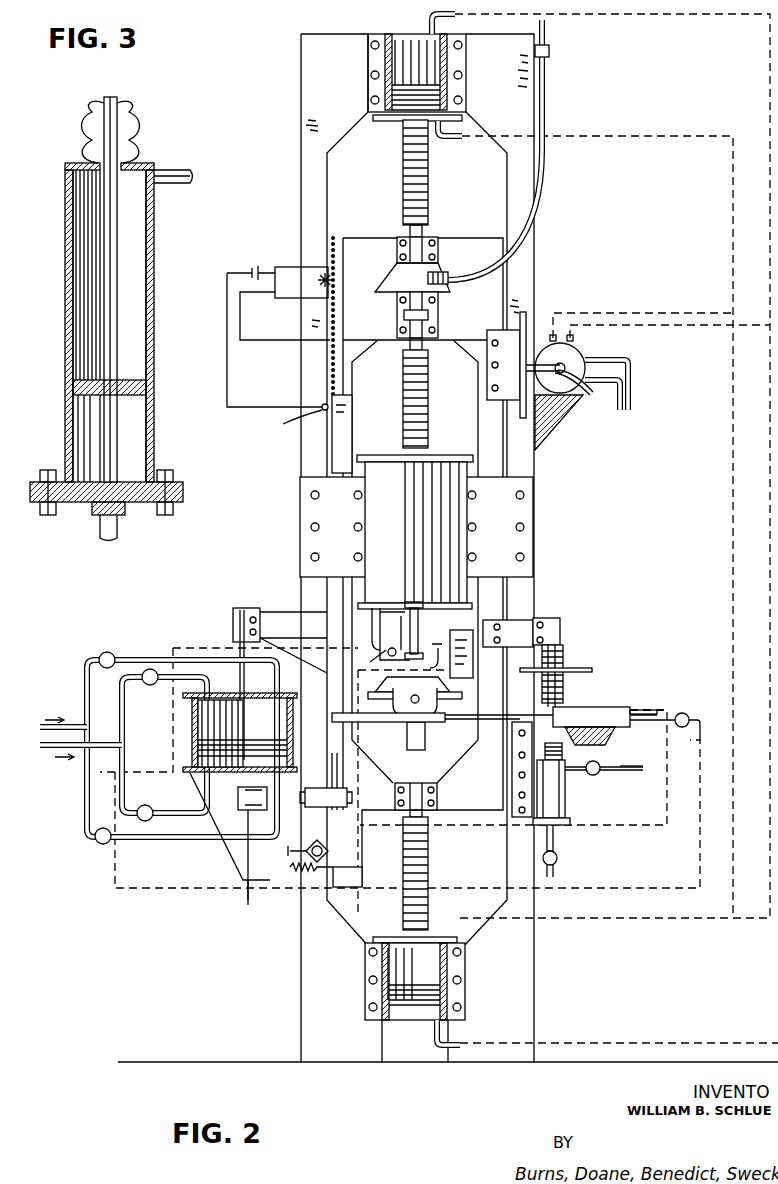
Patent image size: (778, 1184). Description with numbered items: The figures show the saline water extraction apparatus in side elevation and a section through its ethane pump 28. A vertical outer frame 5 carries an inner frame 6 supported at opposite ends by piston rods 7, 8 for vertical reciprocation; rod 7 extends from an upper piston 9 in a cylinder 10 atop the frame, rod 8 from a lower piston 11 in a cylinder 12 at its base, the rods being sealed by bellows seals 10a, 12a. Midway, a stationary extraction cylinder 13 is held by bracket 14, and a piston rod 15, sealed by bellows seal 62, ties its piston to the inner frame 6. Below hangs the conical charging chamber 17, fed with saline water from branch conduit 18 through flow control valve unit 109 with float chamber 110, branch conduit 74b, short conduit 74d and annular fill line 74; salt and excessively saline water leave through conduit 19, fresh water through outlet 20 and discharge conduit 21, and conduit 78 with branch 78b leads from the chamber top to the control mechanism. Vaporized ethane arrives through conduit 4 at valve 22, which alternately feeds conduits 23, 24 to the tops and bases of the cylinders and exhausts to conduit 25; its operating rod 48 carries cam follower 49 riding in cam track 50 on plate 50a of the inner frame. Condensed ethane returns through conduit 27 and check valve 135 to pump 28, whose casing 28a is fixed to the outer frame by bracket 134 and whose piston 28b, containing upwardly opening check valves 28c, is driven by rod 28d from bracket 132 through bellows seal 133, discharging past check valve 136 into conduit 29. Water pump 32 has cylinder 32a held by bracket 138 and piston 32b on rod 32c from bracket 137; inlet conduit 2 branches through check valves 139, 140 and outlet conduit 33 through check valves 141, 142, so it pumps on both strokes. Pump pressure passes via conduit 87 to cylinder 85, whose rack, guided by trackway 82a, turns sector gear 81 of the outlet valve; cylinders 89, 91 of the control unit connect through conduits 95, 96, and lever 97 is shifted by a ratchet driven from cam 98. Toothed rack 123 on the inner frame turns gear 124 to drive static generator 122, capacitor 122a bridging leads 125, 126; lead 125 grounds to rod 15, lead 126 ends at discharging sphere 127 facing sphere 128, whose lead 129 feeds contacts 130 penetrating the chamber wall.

In FIG. 2, the conduit 2 is at (46, 762).
In FIG. 2, the conduit 4 is at (614, 408).
In FIG. 2, the vertical outer frame 5 is at (520, 182).
In FIG. 2, the inner frame 6 is at (520, 292).
In FIG. 2, the piston rod 7 is at (428, 236).
In FIG. 2, the piston rod 8 is at (405, 930).
In FIG. 2, the upper piston 9 is at (435, 100).
In FIG. 2, the cylinder 10 is at (412, 40).
In FIG. 2, the bellows type seal 10a is at (428, 192).
In FIG. 2, the lower piston 11 is at (455, 998).
In FIG. 2, the cylinder 12 is at (385, 966).
In FIG. 2, the bellows type seal 12a is at (426, 852).
In FIG. 2, the stationary extraction cylinder 13 is at (415, 516).
In FIG. 2, the bracket 14 is at (528, 512).
In FIG. 2, the reciprocable piston rod 15 is at (428, 348).
In FIG. 2, the charging chamber 17 is at (470, 630).
In FIG. 2, the branch conduit 18 is at (567, 670).
In FIG. 2, the conduit 19 is at (426, 742).
In FIG. 2, the outlet 20 is at (434, 280).
In FIG. 2, the fresh water discharge conduit 21 is at (548, 90).
In FIG. 2, the valve 22 is at (572, 366).
In FIG. 2, the conduit 23 is at (702, 16).
In FIG. 2, the conduit 24 is at (666, 137).
In FIG. 2, the exhaust conduit 25 is at (631, 396).
In FIG. 3, the conduit 27 is at (110, 538).
In FIG. 2, the conduit 27 is at (556, 874).
In FIG. 2, the circulating pump 28 is at (556, 808).
In FIG. 3, the casing 28a is at (66, 296).
In FIG. 3, the piston 28b is at (97, 400).
In FIG. 3, the upwardly opening check valves 28c is at (137, 378).
In FIG. 3, the piston rod 28d is at (108, 220).
In FIG. 3, the conduit 29 is at (170, 172).
In FIG. 2, the conduit 29 is at (632, 778).
In FIG. 2, the water circulating pump 32 is at (232, 778).
In FIG. 2, the cylinder 32a is at (196, 728).
In FIG. 2, the piston 32b is at (256, 742).
In FIG. 2, the piston rod 32c is at (240, 655).
In FIG. 2, the conduit 33 is at (78, 720).
In FIG. 2, the operating rod 48 is at (580, 389).
In FIG. 2, the cam follower 49 is at (550, 426).
In FIG. 2, the cam track 50 is at (520, 322).
In FIG. 2, the plate 50a is at (528, 470).
In FIG. 2, the bellows seal 62 is at (400, 398).
In FIG. 2, the annular fill line 74 is at (384, 608).
In FIG. 2, the branch conduit 74b is at (403, 612).
In FIG. 2, the connecting short conduit 74d is at (438, 648).
In FIG. 2, the conduit 78 is at (372, 608).
In FIG. 2, the branch conduit 78b is at (250, 904).
In FIG. 2, the sector gear 81 is at (456, 706).
In FIG. 2, the stationary trackway 82a is at (396, 722).
In FIG. 2, the cylinder 85 is at (604, 710).
In FIG. 2, the conduit 87 is at (702, 878).
In FIG. 2, the cylinder 89 is at (254, 812).
In FIG. 2, the cylinder 91 is at (332, 812).
In FIG. 2, the conduit 95 is at (668, 770).
In FIG. 2, the conduit 96 is at (292, 650).
In FIG. 2, the lever 97 is at (308, 839).
In FIG. 2, the cam 98 is at (352, 888).
In FIG. 2, the flow control valve unit 109 is at (510, 622).
In FIG. 2, the float chamber 110 is at (420, 604).
In FIG. 2, the constant polarity static electricity generator 122 is at (292, 268).
In FIG. 2, the charge accumulating capacitor unit 122a is at (255, 268).
In FIG. 2, the toothed rack 123 is at (339, 250).
In FIG. 2, the operating gear 124 is at (325, 276).
In FIG. 2, the electrical lead 125 is at (290, 344).
In FIG. 2, the lead 126 is at (250, 406).
In FIG. 2, the small discharging sphere 127 is at (297, 419).
In FIG. 2, the second discharging sphere 128 is at (352, 428).
In FIG. 2, the electrical lead 129 is at (316, 510).
In FIG. 2, the electrical contacts 130 is at (388, 652).
In FIG. 2, the mounting bracket 132 is at (546, 618).
In FIG. 2, the bellows type seal 133 is at (565, 695).
In FIG. 2, the mounting bracket 134 is at (530, 822).
In FIG. 2, the check valve 135 is at (558, 862).
In FIG. 2, the check valve 136 is at (598, 778).
In FIG. 2, the mounting bracket 137 is at (284, 612).
In FIG. 2, the mounting bracket 138 is at (320, 750).
In FIG. 2, the check valve 139 is at (138, 812).
In FIG. 2, the check valve 140 is at (138, 685).
In FIG. 2, the check valve 141 is at (100, 845).
In FIG. 2, the check valve 142 is at (107, 668).